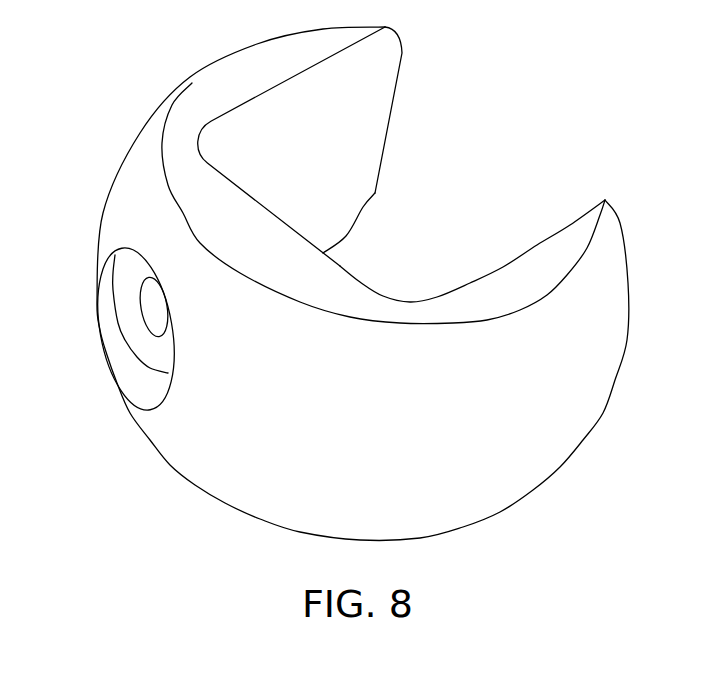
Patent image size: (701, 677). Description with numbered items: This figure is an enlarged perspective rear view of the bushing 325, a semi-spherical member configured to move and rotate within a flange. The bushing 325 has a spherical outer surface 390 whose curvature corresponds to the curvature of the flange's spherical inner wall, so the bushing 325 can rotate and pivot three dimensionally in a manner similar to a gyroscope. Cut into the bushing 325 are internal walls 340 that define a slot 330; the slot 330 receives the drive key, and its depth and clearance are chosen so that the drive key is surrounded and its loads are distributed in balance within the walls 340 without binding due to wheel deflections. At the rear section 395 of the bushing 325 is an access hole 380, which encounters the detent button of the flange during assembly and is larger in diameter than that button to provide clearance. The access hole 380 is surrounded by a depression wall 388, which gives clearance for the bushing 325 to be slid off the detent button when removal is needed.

The bushing 325 is at (329, 305).
The slot 330 is at (538, 238).
The internal walls 340 is at (377, 117).
The access hole 380 is at (126, 367).
The depression wall 388 is at (122, 317).
The spherical outer surface 390 is at (410, 456).
The rear section 395 is at (113, 325).